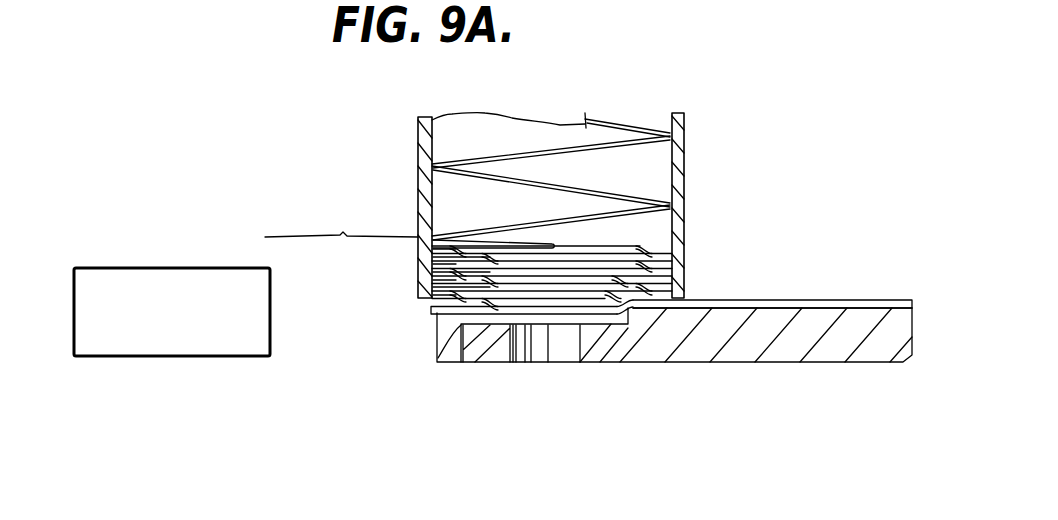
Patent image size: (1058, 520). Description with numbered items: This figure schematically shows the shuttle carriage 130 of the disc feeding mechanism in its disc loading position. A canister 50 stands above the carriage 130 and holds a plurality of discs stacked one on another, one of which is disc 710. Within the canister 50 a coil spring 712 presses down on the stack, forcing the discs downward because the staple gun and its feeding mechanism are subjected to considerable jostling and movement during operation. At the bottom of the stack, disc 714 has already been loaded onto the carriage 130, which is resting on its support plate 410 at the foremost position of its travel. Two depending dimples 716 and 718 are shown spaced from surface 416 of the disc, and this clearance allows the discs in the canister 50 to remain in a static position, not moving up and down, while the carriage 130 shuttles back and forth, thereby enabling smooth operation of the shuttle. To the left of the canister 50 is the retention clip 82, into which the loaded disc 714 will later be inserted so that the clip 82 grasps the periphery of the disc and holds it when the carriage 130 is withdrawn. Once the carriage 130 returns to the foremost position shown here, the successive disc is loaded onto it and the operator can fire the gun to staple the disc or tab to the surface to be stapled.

The canister 50 is at (685, 154).
The retention clip 82 is at (143, 268).
The carriage 130 is at (783, 365).
The support plate 410 is at (803, 300).
The surface of the disc 416 is at (590, 326).
The disc 710 is at (647, 248).
The coil spring 712 is at (602, 122).
The disc 714 is at (427, 302).
The dimple 716 is at (628, 318).
The dimple 718 is at (438, 357).